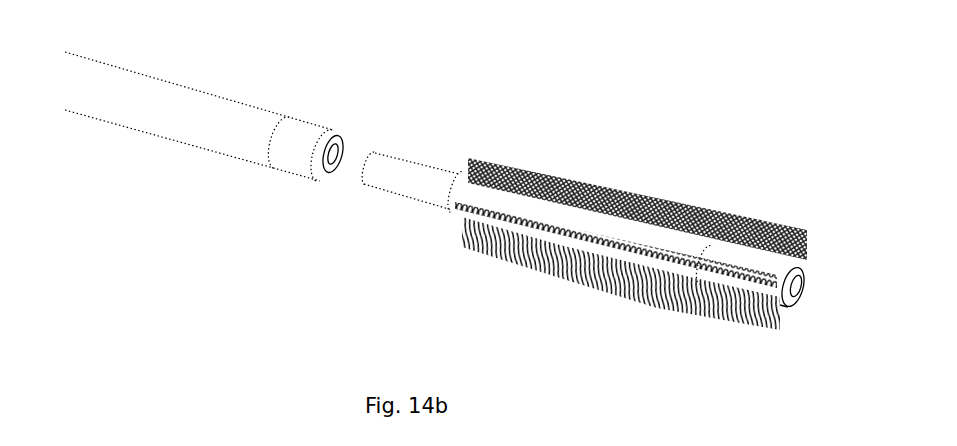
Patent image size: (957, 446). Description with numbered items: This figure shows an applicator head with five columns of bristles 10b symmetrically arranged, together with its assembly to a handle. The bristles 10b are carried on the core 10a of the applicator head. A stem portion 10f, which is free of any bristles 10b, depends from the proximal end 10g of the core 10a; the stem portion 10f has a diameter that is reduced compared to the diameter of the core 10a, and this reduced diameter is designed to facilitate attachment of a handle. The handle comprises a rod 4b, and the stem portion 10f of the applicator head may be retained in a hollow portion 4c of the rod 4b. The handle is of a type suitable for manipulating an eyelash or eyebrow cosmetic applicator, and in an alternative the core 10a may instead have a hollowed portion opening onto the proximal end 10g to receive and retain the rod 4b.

The rod 4b is at (147, 97).
The hollow portion 4c is at (335, 153).
The stem portion 10f is at (402, 168).
The proximal end 10g is at (447, 212).
The core 10a is at (747, 268).
The bristles 10b is at (640, 190).